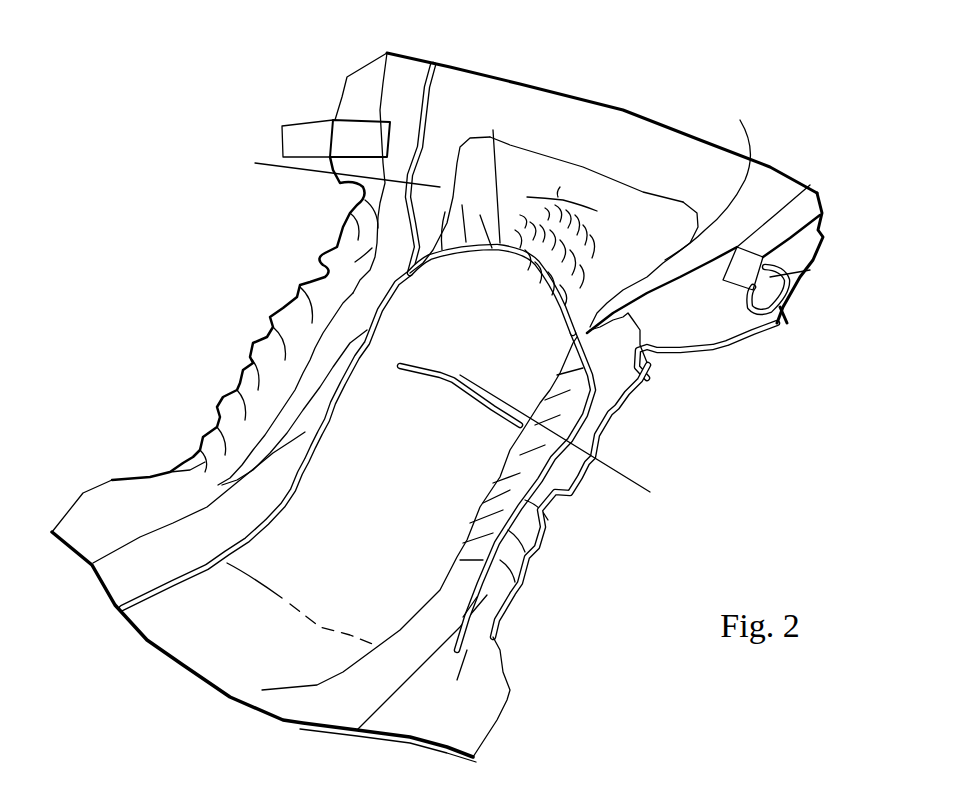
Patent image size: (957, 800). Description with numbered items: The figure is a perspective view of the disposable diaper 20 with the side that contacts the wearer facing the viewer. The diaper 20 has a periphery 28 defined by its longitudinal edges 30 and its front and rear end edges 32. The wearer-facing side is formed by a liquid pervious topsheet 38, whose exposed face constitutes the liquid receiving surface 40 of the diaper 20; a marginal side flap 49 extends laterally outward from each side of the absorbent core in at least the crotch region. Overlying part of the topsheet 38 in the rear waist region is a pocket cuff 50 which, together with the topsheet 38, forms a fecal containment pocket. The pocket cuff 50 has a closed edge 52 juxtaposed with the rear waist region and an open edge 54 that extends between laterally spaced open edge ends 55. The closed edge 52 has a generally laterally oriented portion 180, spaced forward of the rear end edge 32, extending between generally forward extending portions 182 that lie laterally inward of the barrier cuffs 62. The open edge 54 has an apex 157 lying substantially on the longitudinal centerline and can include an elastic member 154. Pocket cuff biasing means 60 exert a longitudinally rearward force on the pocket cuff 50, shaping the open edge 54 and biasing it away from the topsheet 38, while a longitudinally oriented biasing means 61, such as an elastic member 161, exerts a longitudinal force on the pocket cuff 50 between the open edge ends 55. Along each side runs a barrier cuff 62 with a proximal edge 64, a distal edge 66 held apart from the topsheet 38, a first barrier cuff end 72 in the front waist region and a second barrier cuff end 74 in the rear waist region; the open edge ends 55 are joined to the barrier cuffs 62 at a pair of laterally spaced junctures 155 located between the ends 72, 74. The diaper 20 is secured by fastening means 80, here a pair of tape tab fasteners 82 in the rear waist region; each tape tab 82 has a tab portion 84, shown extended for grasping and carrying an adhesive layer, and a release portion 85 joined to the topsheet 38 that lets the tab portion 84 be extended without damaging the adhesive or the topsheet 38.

The diaper 20 is at (468, 404).
The periphery 28 is at (178, 470).
The longitudinal edges 30 is at (262, 336).
The end edges 32 is at (663, 120).
The topsheet 38 is at (613, 113).
The liquid receiving surface 40 is at (445, 432).
The marginal side flap 49 is at (290, 323).
The pocket cuff 50 is at (522, 167).
The closed edge 52 is at (463, 140).
The open edge 54 is at (462, 258).
The open edge ends 55 is at (412, 270).
The pocket cuff biasing means 60 is at (432, 242).
The longitudinally oriented biasing means 61 is at (563, 173).
The barrier cuff 62 is at (403, 204).
The proximal edge 64 is at (433, 83).
The distal edge 66 is at (383, 82).
The first barrier cuff end 72 is at (127, 577).
The second barrier cuff end 74 is at (410, 70).
The fastening means 80 is at (293, 116).
The tape tab fastener 82 is at (353, 117).
The tab portion 84 is at (290, 137).
The release portion 85 is at (338, 150).
The elastic member 154 is at (610, 274).
The junctures 155 is at (410, 268).
The apex 157 is at (523, 255).
The elastic member 161 is at (590, 207).
The laterally oriented portion 180 is at (508, 147).
The forward extending portions 182 is at (481, 183).